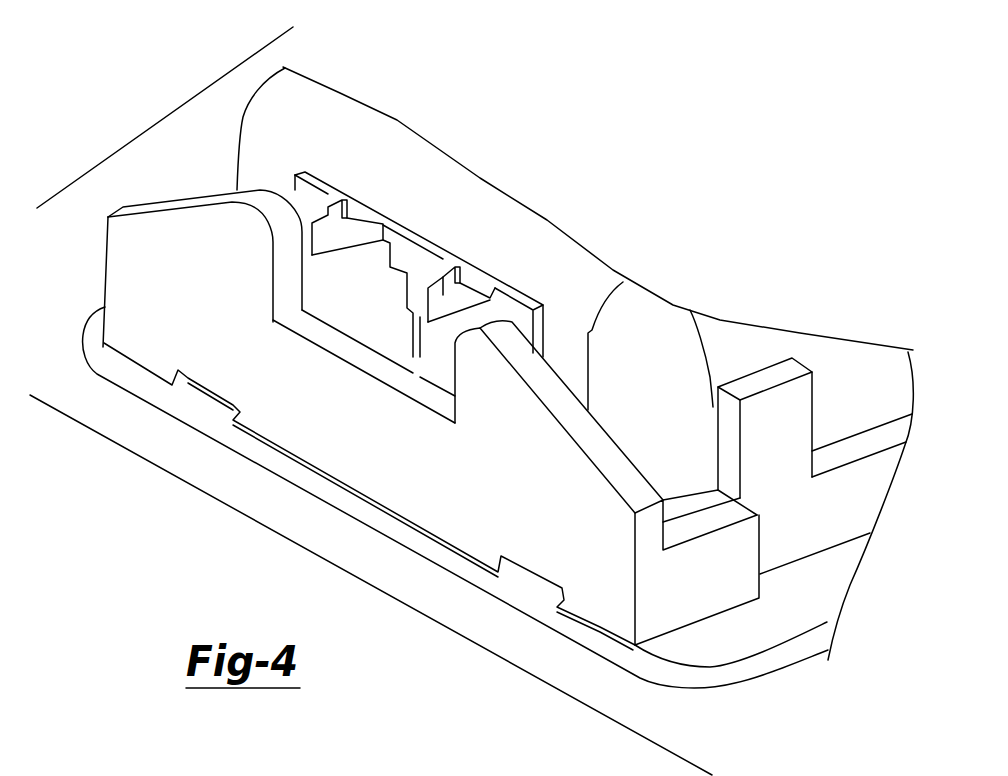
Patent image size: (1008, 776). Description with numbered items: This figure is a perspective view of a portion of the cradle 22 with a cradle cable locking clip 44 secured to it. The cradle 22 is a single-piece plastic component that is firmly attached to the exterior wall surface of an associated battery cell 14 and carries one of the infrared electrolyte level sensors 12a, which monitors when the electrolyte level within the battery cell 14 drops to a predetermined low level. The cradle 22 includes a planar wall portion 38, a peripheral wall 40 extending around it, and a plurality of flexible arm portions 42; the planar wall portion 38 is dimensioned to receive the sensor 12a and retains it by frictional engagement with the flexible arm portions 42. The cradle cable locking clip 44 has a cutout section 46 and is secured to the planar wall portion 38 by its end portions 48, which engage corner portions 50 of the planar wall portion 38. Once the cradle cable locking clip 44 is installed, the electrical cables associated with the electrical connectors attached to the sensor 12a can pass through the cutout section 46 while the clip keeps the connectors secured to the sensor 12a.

The infrared electrolyte level sensor 12a is at (303, 133).
The battery cell 14 is at (47, 380).
The cradle 22 is at (858, 374).
The planar wall portion 38 is at (802, 505).
The peripheral wall 40 is at (733, 633).
The flexible arm portion 42 is at (758, 380).
The cradle cable locking clip 44 is at (583, 532).
The cutout section 46 is at (355, 353).
The end portion 48 is at (760, 543).
The corner portion 50 is at (680, 505).